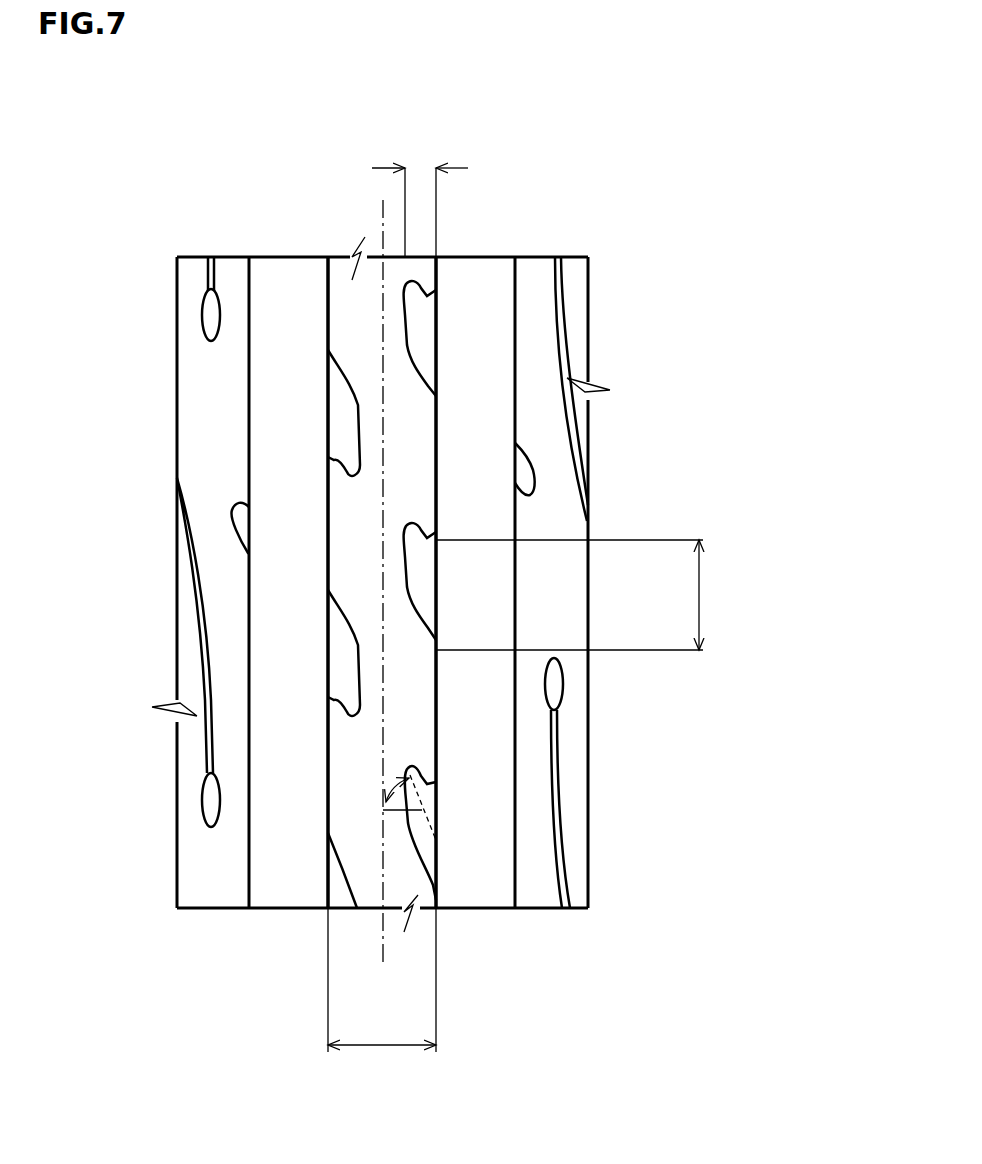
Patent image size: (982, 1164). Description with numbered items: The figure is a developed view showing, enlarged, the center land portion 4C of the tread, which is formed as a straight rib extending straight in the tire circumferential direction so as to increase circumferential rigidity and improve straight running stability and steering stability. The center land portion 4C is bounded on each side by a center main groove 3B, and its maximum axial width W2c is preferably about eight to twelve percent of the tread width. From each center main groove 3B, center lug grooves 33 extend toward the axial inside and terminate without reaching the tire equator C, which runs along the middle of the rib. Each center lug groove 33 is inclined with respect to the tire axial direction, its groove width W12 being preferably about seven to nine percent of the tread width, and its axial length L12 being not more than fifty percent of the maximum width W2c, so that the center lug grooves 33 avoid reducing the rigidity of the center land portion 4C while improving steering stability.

The center main groove 3B is at (289, 300).
The center lug groove 33 is at (335, 423).
The center land portion 4C is at (375, 857).
The tire equator C is at (380, 569).
The axial length of the center lug groove L12 is at (420, 196).
The groove width of the center lug groove W12 is at (601, 595).
The maximum width of the center land portion W2c is at (382, 995).